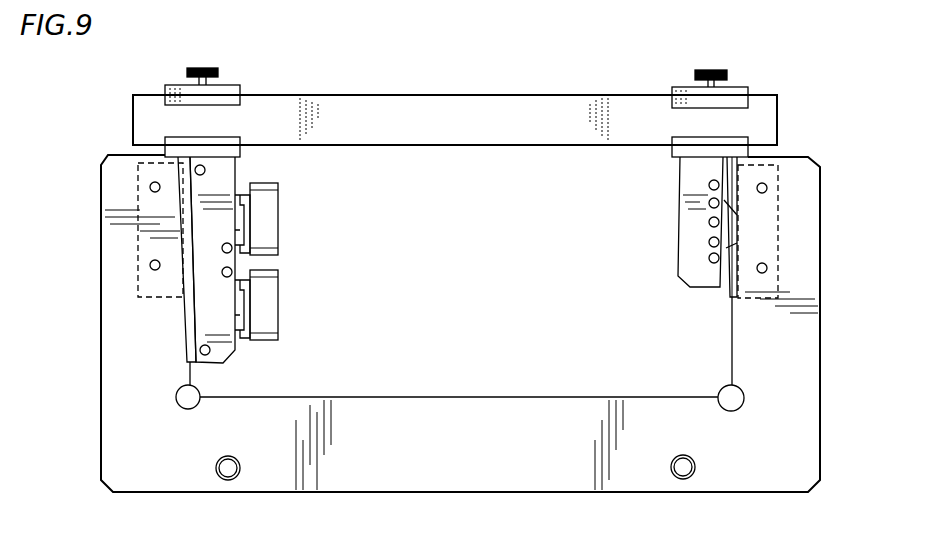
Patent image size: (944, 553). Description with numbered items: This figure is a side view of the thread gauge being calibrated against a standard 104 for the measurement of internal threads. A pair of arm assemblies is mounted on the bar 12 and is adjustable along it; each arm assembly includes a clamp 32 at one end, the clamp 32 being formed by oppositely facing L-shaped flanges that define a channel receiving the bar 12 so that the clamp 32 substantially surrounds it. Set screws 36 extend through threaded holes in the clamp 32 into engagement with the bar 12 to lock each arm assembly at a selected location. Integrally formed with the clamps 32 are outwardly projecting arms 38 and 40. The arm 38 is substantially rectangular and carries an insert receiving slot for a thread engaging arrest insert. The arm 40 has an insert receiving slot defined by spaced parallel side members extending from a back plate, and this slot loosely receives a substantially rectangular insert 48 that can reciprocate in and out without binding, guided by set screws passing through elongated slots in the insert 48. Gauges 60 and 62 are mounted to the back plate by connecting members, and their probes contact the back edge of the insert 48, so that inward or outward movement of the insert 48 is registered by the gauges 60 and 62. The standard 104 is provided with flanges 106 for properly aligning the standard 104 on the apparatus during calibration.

The bar 12 is at (487, 105).
The clamp 32 is at (228, 92).
The set screw 36 is at (710, 70).
The arm 38 is at (692, 182).
The arm 40 is at (220, 173).
The insert 48 is at (195, 365).
The guage 60 is at (273, 305).
The guage 62 is at (273, 222).
The standard 104 is at (805, 332).
The flange 106 is at (733, 177).